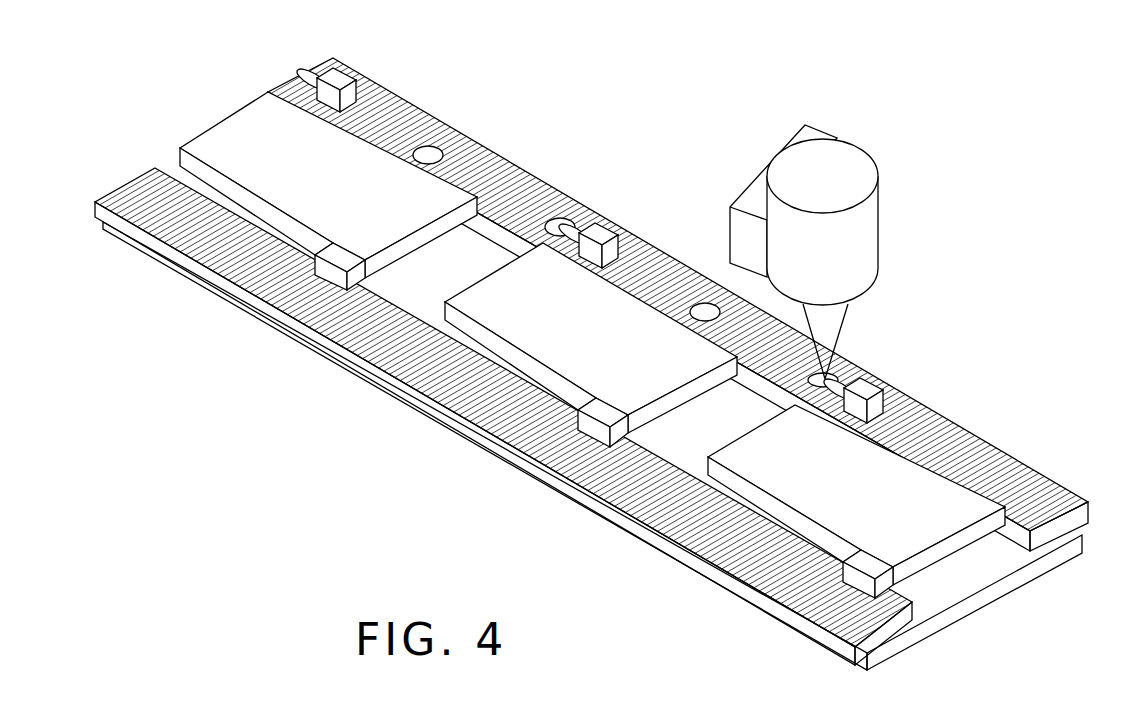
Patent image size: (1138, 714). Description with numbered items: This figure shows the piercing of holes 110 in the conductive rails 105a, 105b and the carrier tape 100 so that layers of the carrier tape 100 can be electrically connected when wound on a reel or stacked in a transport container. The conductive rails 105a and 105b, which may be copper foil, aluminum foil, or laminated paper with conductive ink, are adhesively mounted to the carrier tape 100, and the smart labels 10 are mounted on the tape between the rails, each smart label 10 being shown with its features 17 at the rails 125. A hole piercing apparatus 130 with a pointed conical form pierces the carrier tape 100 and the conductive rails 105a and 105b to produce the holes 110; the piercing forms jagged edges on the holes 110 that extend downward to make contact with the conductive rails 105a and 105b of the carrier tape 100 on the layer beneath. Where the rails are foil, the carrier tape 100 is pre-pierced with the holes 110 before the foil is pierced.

The smart label 10 is at (383, 158).
The tab / slot of smart label 17 is at (322, 78).
The carrier tape 100 is at (975, 598).
The conductive rail 105a is at (1053, 530).
The conductive rail 105b is at (887, 633).
The hole 110 is at (563, 218).
The guide rail 125 is at (600, 383).
The hole piercing apparatus 130 is at (863, 215).